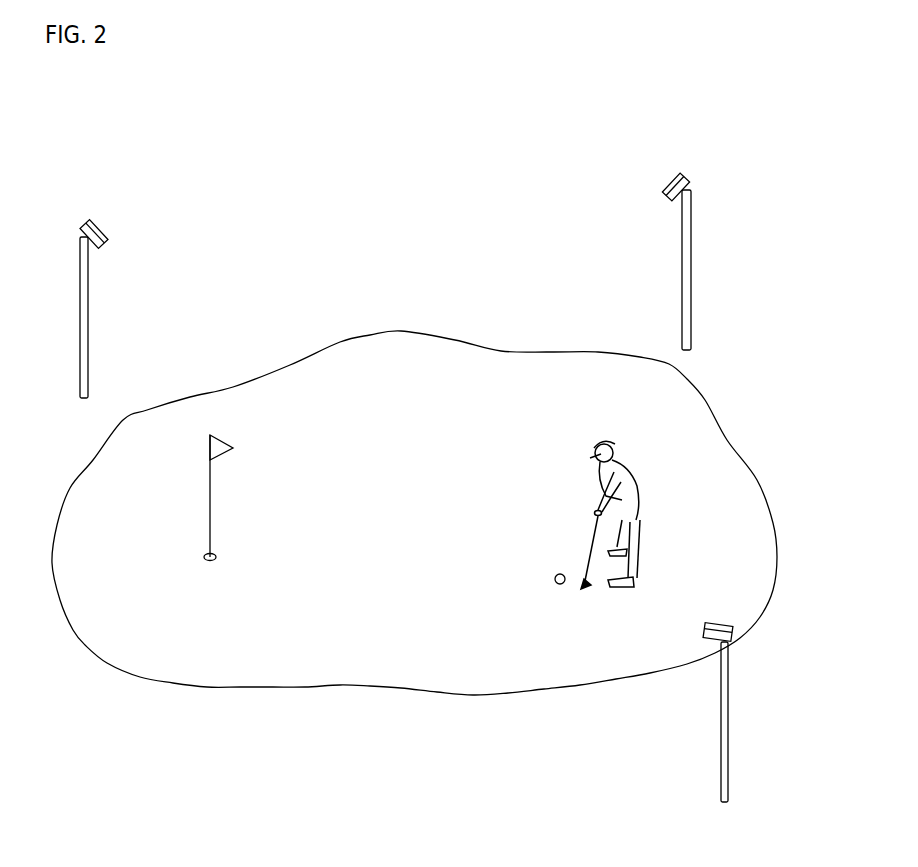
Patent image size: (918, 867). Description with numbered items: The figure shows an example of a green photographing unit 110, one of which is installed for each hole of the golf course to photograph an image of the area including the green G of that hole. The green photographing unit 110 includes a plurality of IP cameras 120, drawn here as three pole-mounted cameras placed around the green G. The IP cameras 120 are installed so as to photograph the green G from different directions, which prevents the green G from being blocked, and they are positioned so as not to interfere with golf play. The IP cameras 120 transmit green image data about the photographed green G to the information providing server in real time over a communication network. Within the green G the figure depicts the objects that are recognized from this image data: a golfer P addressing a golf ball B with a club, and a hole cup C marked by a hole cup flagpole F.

The green photographing unit 110 is at (713, 134).
The IP camera 120 is at (96, 232).
The green G is at (389, 345).
The hole cup flagpole F is at (214, 449).
The hole cup C is at (206, 562).
The golf ball B is at (556, 573).
The golfer P is at (623, 464).